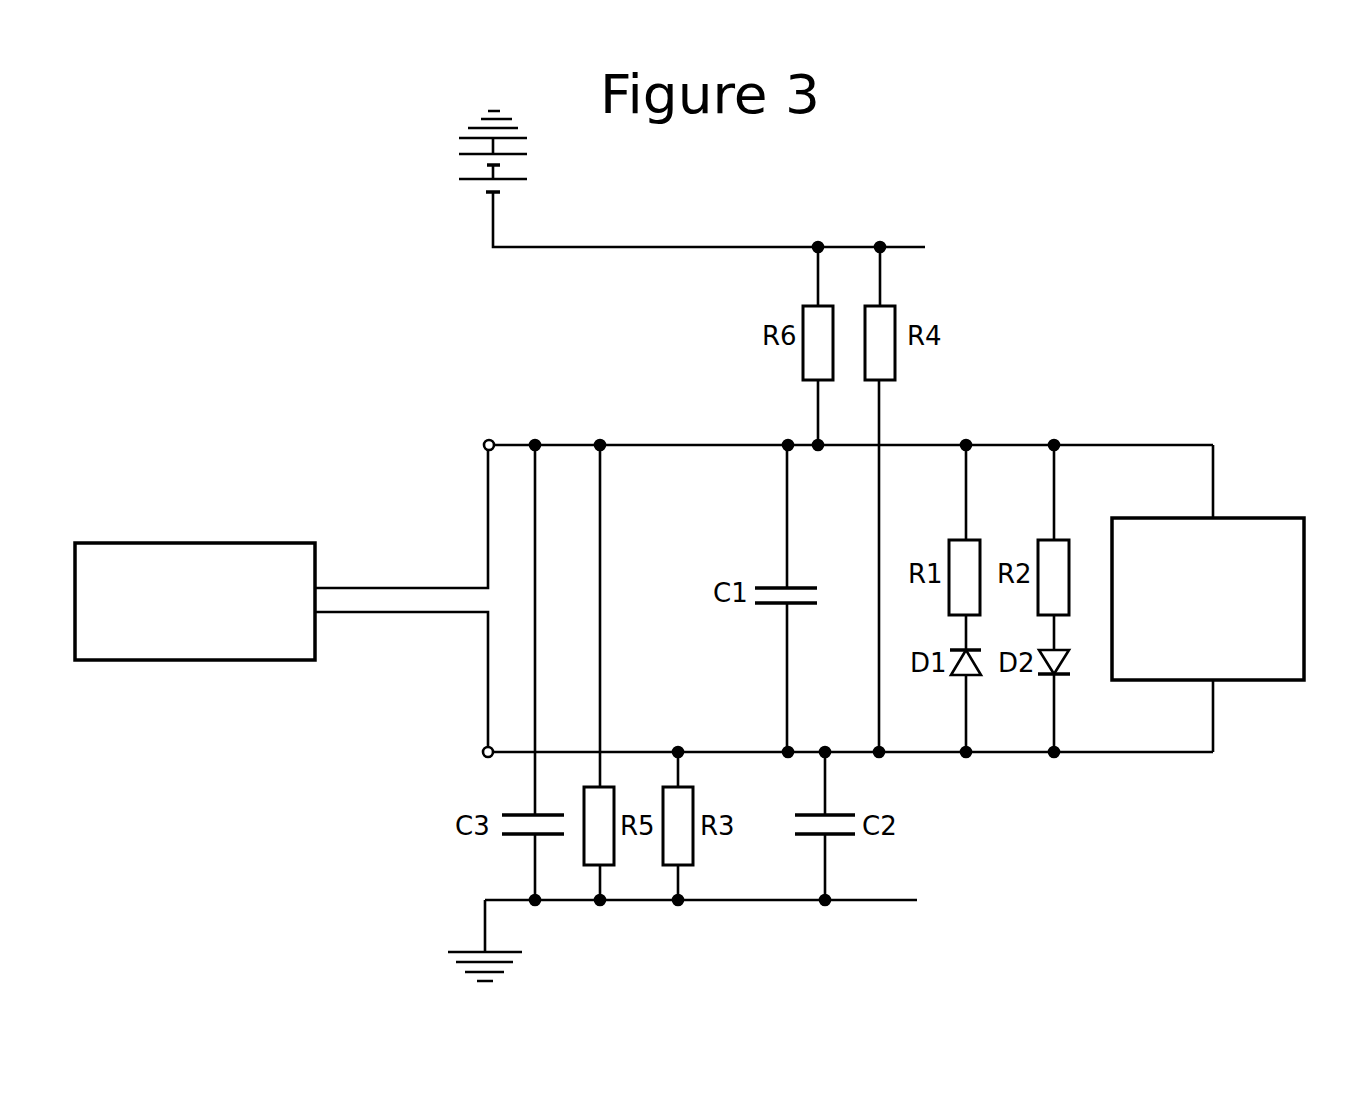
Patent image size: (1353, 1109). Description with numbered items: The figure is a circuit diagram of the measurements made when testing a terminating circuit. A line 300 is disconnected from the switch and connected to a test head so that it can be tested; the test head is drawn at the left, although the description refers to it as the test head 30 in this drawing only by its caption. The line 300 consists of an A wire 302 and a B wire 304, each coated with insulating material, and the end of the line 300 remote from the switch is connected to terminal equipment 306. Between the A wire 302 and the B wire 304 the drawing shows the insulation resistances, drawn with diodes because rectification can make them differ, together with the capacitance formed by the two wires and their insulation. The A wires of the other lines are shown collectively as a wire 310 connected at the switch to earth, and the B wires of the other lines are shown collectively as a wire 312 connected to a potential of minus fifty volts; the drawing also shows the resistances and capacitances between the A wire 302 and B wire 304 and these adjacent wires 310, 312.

The test head 30 is at (138, 660).
The line 300 is at (397, 648).
The A wire 302 is at (713, 752).
The B wire 304 is at (712, 447).
The terminal equipment 306 is at (1243, 680).
The wire 310 is at (860, 901).
The wire 312 is at (645, 250).